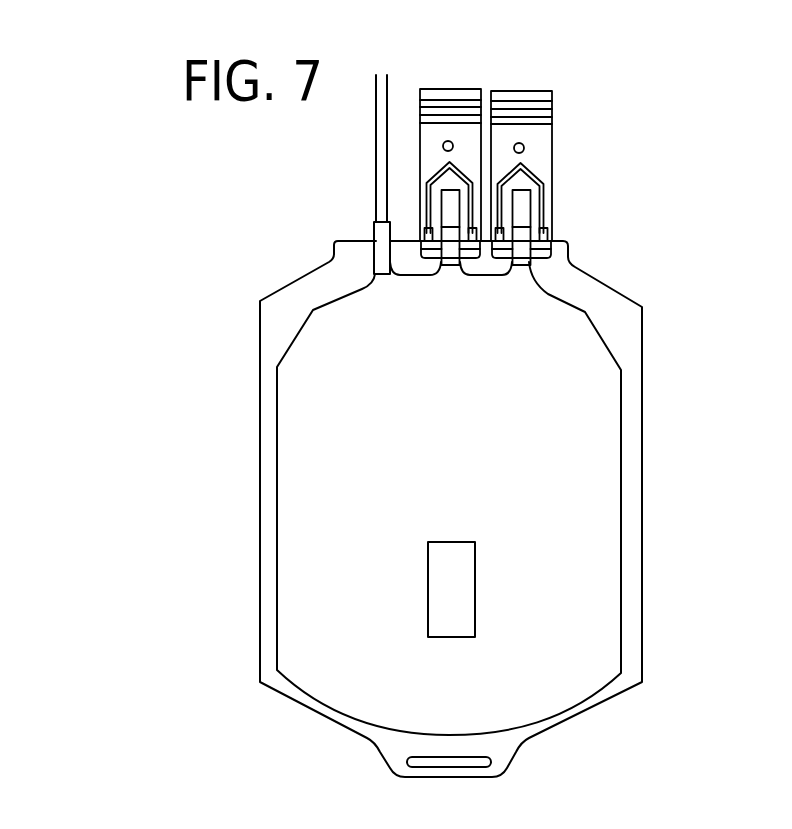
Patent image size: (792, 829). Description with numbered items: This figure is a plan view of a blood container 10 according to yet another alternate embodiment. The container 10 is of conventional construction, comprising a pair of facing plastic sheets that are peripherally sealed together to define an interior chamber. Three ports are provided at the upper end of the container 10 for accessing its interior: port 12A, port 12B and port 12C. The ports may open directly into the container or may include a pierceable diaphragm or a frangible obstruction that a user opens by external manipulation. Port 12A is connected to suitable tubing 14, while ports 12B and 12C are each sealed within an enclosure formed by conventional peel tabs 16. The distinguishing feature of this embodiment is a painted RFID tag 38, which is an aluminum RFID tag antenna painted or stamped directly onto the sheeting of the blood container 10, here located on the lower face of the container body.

The blood container 10 is at (690, 458).
The port 12A is at (382, 282).
The port 12B is at (450, 275).
The port 12C is at (517, 277).
The tubing 14 is at (381, 167).
The peel tabs 16 is at (510, 98).
The painted RFID tag 38 is at (440, 588).